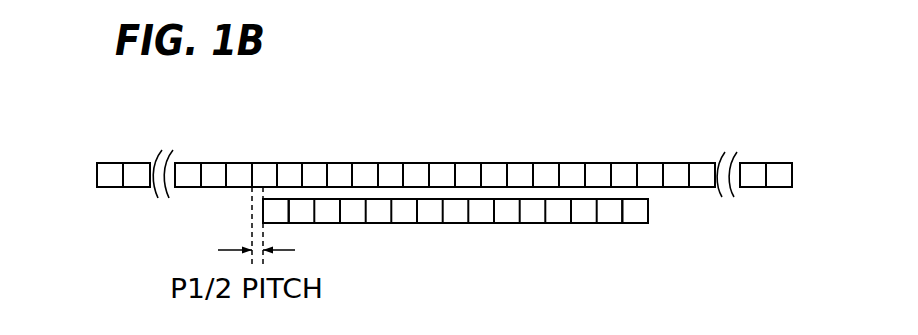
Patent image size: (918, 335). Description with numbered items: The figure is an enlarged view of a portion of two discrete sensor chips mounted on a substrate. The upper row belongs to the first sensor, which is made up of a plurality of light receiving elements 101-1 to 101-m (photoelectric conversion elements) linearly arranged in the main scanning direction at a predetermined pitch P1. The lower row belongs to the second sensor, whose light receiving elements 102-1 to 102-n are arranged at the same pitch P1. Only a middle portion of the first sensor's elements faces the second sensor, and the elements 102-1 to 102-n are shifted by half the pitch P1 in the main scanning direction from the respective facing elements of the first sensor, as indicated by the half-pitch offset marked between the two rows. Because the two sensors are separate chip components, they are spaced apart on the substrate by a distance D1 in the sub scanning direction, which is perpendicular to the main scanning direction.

The light receiving element 101-1 is at (117, 163).
The light receiving element 101-m is at (783, 163).
The light receiving element 102-1 is at (278, 225).
The light receiving element 102-n is at (633, 223).
The pitch P1 is at (490, 150).
The distance D1 is at (792, 173).